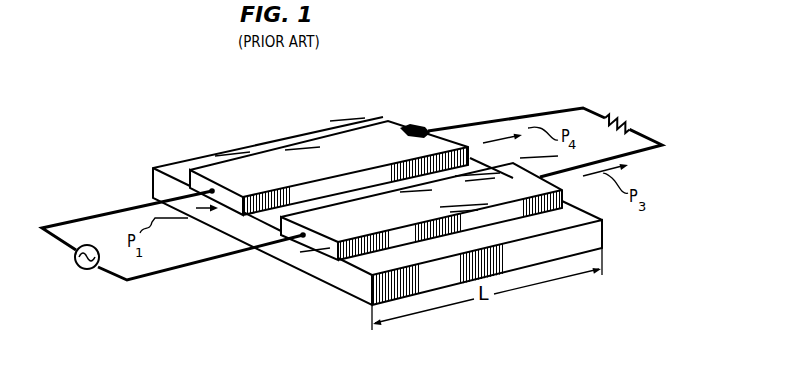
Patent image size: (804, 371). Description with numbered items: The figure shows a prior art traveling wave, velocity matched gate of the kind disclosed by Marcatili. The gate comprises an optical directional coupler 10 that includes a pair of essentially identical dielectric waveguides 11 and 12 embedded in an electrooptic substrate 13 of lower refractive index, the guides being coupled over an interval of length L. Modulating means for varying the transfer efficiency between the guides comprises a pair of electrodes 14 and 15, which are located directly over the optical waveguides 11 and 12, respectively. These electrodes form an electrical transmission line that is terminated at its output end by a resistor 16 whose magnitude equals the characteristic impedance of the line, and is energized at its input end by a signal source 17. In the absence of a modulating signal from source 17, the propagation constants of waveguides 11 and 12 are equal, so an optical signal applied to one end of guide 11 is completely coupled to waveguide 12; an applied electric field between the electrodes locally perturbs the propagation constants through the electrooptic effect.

The optical directional coupler 10 is at (658, 251).
The dielectric waveguide 11 is at (222, 208).
The dielectric waveguide 12 is at (295, 242).
The electrooptic substrate 13 is at (342, 278).
The electrode 14 is at (407, 122).
The electrode 15 is at (511, 185).
The resistor 16 is at (620, 113).
The signal source 17 is at (79, 261).